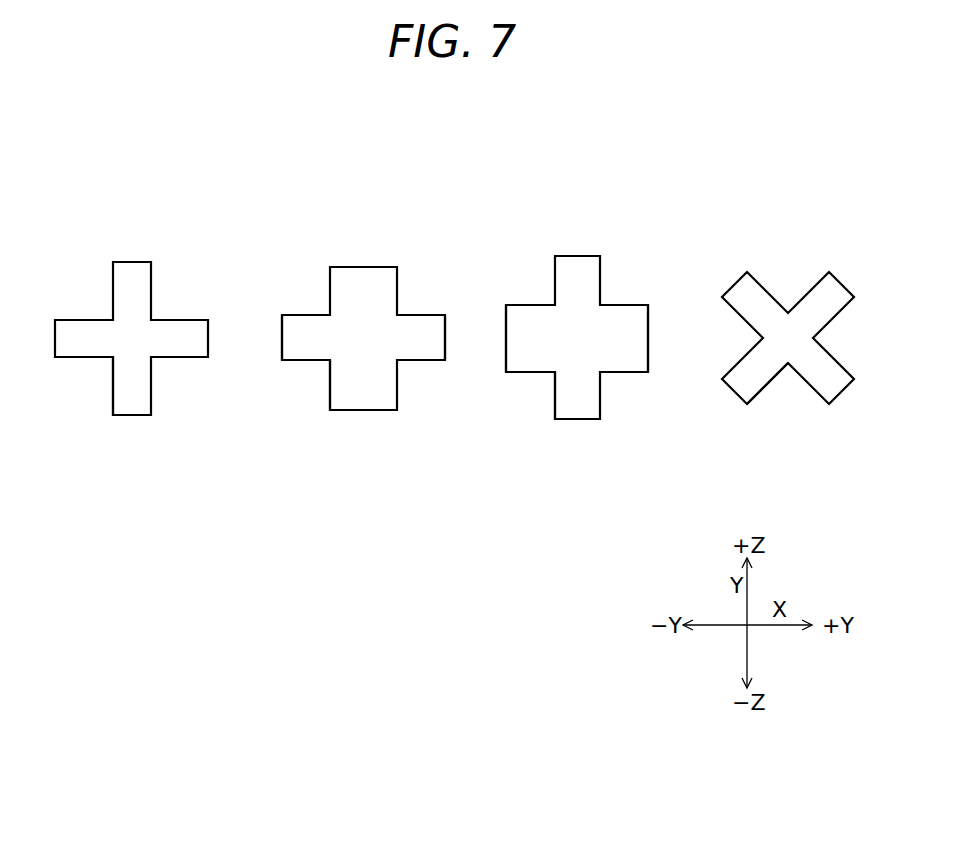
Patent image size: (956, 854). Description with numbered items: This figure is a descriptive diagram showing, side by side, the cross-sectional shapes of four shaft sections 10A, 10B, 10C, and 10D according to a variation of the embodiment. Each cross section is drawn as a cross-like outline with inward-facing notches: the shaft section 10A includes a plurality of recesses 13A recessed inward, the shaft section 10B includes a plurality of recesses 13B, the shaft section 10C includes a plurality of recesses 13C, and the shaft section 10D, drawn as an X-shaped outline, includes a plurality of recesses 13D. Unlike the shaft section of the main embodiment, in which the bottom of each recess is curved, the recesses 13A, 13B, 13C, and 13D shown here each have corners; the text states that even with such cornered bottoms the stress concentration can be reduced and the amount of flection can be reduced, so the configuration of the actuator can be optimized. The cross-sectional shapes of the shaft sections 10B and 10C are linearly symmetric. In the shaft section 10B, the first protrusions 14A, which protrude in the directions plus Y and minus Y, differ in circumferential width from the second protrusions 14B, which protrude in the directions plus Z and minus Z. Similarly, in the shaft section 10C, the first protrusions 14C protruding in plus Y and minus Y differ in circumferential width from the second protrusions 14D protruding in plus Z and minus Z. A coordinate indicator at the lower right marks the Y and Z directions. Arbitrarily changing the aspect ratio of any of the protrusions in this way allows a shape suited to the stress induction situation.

The shaft section 10A is at (86, 233).
The shaft section 10B is at (301, 233).
The shaft section 10C is at (528, 233).
The shaft section 10D is at (714, 233).
The recess 13A is at (113, 377).
The recess 13B is at (328, 377).
The recess 13C is at (555, 388).
The recess 13D is at (775, 383).
The first protrusion 14A is at (290, 327).
The second protrusion 14B is at (367, 278).
The first protrusion 14C is at (633, 313).
The second protrusion 14D is at (583, 265).